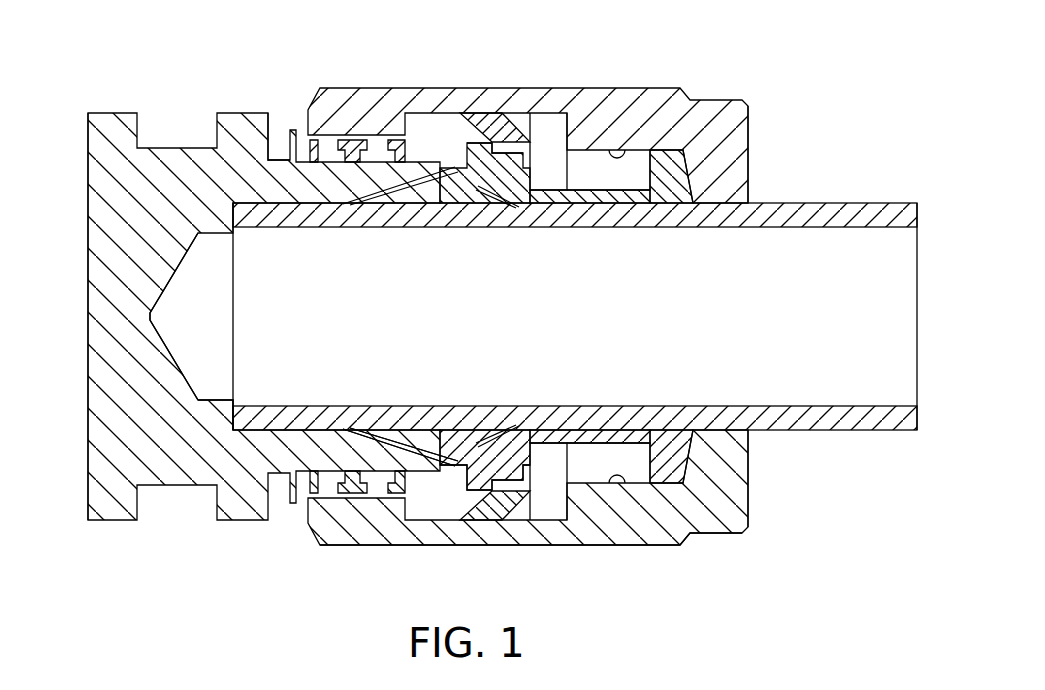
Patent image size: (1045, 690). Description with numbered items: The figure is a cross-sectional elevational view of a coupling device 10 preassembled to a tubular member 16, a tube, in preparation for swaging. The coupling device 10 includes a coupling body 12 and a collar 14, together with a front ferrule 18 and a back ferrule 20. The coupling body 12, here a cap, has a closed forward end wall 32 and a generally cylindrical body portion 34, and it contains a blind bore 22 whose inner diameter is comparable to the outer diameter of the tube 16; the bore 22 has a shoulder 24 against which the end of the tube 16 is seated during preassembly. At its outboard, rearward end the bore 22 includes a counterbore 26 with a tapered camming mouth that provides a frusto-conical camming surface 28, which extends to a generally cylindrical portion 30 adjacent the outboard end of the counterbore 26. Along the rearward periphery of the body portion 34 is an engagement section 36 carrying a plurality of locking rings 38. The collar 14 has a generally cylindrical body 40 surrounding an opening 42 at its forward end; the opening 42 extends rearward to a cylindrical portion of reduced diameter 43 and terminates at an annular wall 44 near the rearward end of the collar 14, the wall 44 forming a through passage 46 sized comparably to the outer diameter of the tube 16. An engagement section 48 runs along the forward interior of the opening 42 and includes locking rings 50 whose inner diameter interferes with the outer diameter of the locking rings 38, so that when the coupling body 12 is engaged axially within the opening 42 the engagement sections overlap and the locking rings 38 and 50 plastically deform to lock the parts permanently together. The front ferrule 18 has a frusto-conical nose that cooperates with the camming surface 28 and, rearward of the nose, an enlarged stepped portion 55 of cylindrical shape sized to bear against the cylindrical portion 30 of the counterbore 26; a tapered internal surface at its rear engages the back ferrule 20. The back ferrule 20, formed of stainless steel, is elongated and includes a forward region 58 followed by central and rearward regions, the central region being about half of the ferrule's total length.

The coupling device 10 is at (471, 308).
The coupling body 12 is at (232, 288).
The collar 14 is at (573, 347).
The tubular member 16 is at (913, 222).
The front ferrule 18 is at (405, 195).
The back ferrule 20 is at (602, 205).
The blind bore 22 is at (187, 377).
The shoulder 24 is at (249, 417).
The counterbore 26 is at (440, 435).
The camming surface 28 is at (380, 435).
The cylindrical portion 30 is at (497, 445).
The closed forward end wall 32 is at (115, 398).
The cylindrical body portion 34 is at (292, 177).
The engagement section 36 is at (386, 299).
The locking rings 38 is at (367, 142).
The cylindrical body 40 is at (622, 537).
The opening 42 is at (575, 163).
The cylindrical portion of reduced diameter 43 is at (633, 150).
The annular wall 44 is at (743, 167).
The through passage 46 is at (720, 205).
The engagement section 48 is at (487, 146).
The locking rings 50 is at (530, 113).
The enlarged stepped portion 55 is at (512, 206).
The forward region 58 is at (395, 500).